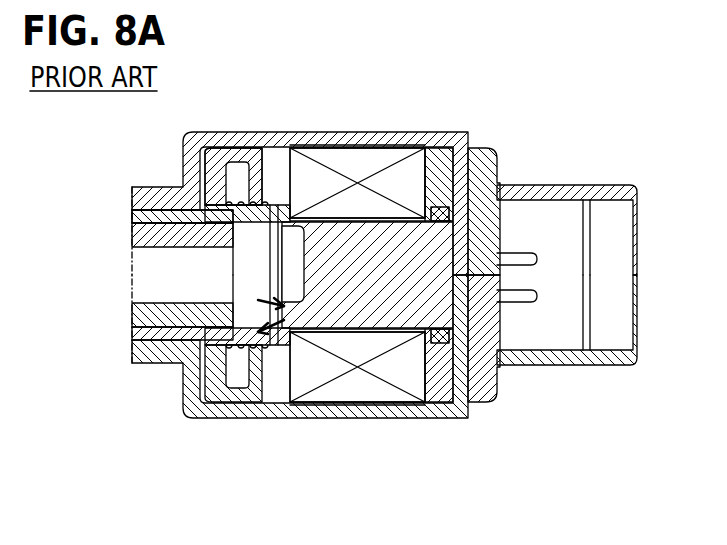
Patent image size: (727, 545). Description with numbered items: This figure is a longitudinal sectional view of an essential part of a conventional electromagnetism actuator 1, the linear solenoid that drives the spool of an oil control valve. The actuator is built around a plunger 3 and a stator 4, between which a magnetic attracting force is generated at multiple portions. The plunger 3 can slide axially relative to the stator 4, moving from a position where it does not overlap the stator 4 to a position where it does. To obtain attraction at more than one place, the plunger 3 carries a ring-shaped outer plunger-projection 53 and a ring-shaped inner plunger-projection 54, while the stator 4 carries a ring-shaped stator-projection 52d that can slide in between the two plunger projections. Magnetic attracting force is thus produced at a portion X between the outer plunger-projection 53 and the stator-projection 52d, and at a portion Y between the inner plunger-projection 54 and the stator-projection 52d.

The electromagnetism actuator 1 is at (509, 131).
The plunger 3 is at (207, 182).
The stator 4 is at (378, 252).
The stator-projection 52d is at (292, 237).
The outer plunger-projection 53 is at (207, 216).
The inner plunger-projection 54 is at (233, 259).
The portion X is at (262, 322).
The portion Y is at (262, 303).